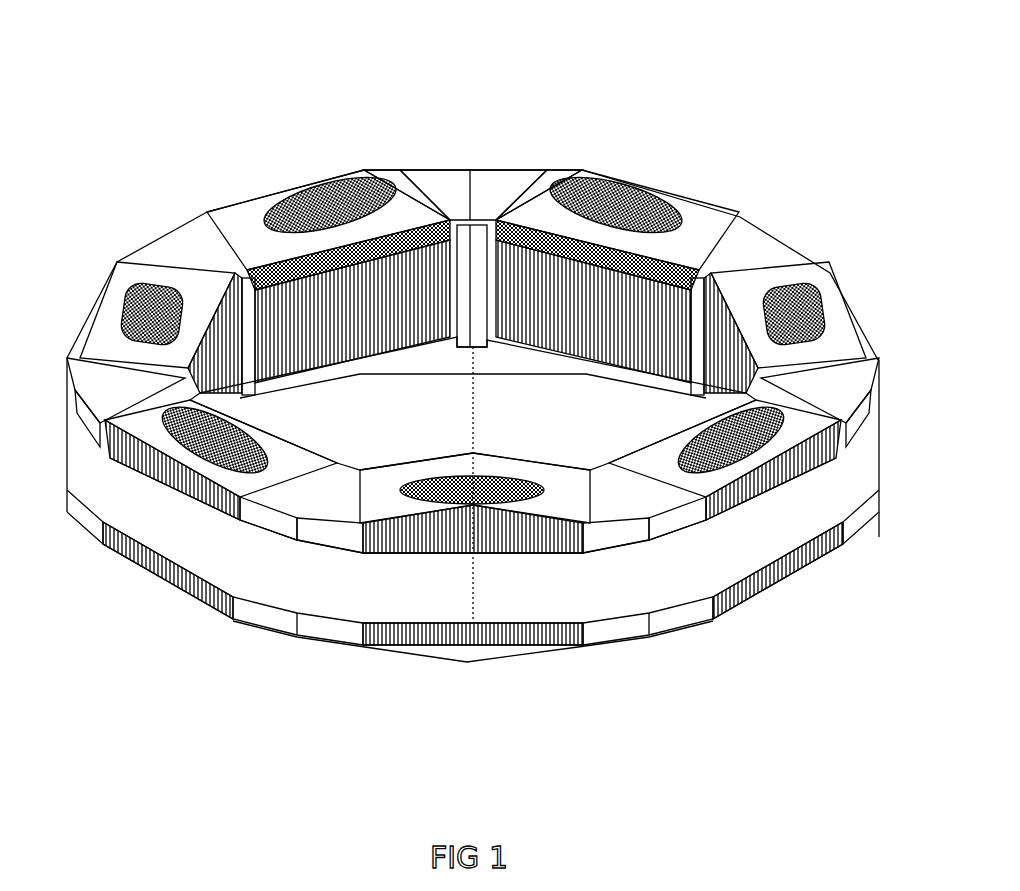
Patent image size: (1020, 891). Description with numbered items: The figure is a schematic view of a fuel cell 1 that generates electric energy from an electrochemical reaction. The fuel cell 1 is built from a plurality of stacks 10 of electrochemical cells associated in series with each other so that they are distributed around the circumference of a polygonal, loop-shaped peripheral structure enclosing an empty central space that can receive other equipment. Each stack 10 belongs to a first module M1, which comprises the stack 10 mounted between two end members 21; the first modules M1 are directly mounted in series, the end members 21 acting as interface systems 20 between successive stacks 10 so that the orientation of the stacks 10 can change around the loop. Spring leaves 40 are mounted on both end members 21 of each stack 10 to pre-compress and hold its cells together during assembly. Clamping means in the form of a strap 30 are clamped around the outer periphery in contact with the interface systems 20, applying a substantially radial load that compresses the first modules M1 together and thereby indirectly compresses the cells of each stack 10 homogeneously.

The fuel cell 1 is at (268, 95).
The stack 10 is at (267, 220).
The interface system 20 is at (83, 178).
The end member 21 is at (140, 243).
The strap 30 is at (830, 498).
The spring leaf 40 is at (415, 180).
The first module M1 is at (288, 165).